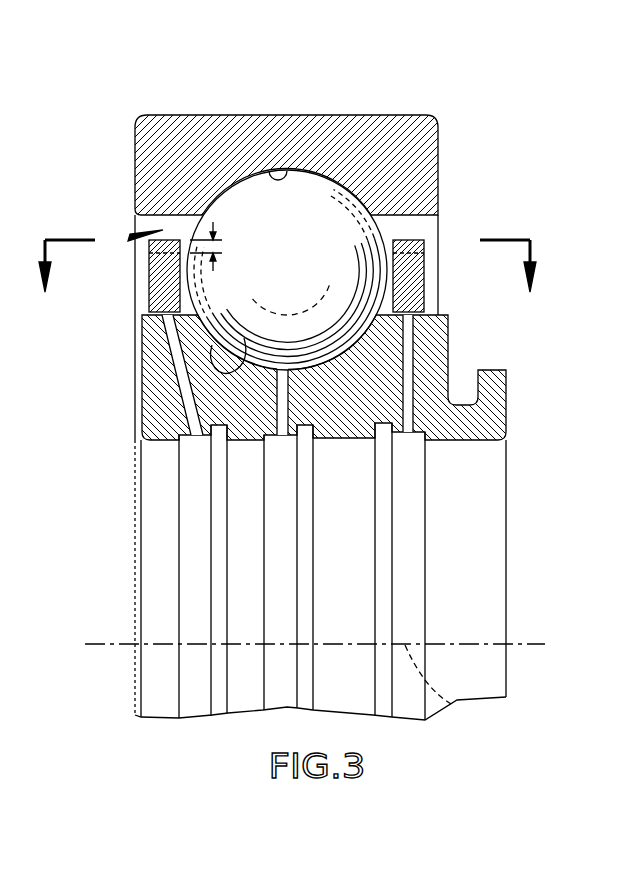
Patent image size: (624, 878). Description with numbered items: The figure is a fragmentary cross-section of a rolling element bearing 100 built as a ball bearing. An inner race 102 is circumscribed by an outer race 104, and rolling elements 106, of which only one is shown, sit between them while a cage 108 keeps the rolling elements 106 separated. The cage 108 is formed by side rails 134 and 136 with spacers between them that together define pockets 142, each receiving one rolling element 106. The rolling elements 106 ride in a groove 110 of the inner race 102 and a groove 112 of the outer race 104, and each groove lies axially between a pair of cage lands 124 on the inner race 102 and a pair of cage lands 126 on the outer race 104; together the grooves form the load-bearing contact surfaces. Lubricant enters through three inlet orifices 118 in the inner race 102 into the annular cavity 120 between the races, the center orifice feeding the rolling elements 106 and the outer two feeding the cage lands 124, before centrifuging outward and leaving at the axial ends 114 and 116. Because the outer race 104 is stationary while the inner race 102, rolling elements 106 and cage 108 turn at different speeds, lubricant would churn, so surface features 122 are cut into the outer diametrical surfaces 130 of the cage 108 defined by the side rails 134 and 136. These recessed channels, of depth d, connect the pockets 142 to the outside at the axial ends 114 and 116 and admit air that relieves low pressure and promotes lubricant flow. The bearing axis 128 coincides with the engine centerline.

The bearing 100 is at (364, 67).
The inner race 102 is at (142, 408).
The outer race 104 is at (300, 130).
The rolling elements 106 is at (310, 185).
The cage 108 is at (439, 294).
The groove 110 is at (238, 365).
The groove 112 is at (270, 167).
The axial end 114 is at (135, 128).
The axial end 116 is at (438, 127).
The inlet orifices 118 is at (198, 434).
The cavity 120 is at (130, 237).
The surface features 122 is at (152, 255).
The cage lands 124 is at (148, 318).
The cage lands 126 is at (135, 228).
The axis 128 is at (452, 702).
The outer diametrical surfaces 130 is at (416, 240).
The side rail 134 is at (170, 292).
The side rail 136 is at (395, 277).
The pockets 142 is at (394, 305).